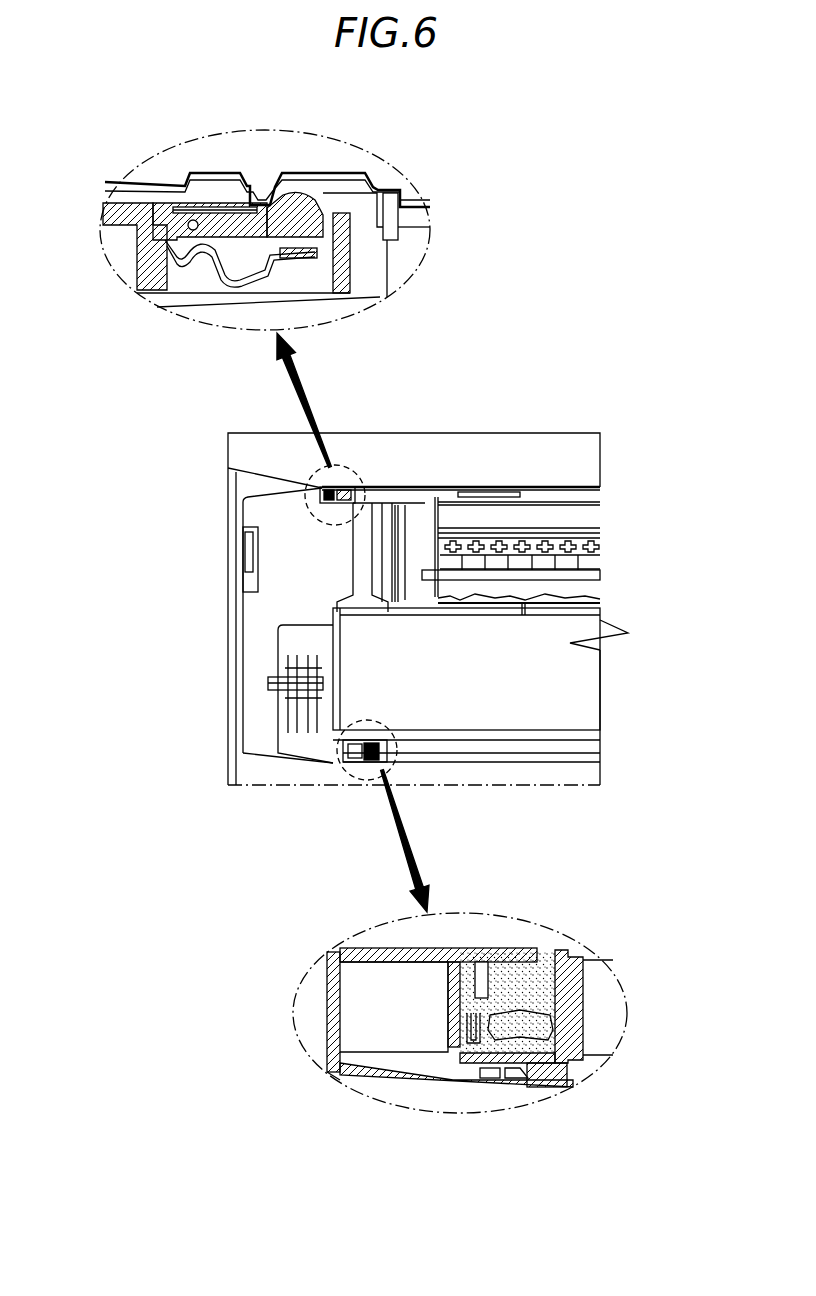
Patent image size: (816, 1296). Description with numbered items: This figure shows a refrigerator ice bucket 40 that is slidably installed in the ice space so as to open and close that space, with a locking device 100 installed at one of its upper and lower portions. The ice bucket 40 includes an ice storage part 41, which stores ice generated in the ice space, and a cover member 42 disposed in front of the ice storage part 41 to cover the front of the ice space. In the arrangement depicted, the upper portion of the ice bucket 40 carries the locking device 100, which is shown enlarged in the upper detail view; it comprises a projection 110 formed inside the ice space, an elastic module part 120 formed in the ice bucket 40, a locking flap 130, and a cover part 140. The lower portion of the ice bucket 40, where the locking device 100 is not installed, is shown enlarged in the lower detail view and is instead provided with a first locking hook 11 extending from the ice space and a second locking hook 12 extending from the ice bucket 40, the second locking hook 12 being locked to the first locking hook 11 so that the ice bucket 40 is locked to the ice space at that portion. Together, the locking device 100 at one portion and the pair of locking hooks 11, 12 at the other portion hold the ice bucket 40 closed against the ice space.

The first locking hook 11 is at (487, 1080).
The second locking hook 12 is at (513, 1077).
The ice bucket 40 is at (330, 1000).
The ice storage part 41 is at (483, 712).
The cover member 42 is at (258, 665).
The locking device 100 is at (350, 468).
The projection 110 is at (263, 220).
The elastic module part 120 is at (153, 273).
The locking flap 130 is at (253, 207).
The cover part 140 is at (208, 213).